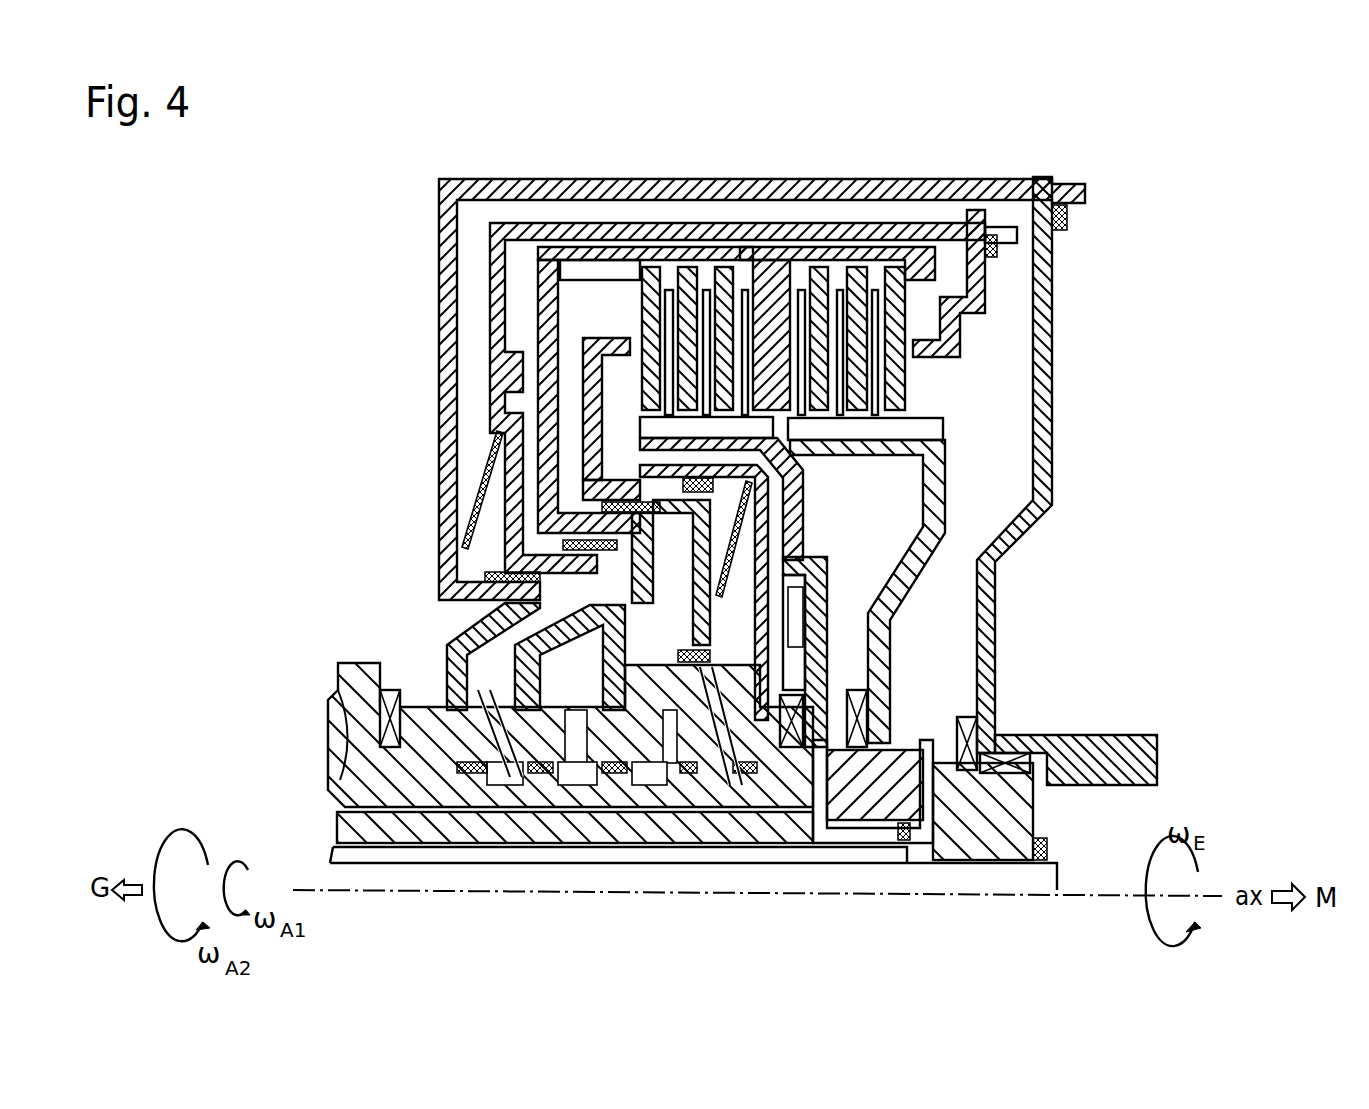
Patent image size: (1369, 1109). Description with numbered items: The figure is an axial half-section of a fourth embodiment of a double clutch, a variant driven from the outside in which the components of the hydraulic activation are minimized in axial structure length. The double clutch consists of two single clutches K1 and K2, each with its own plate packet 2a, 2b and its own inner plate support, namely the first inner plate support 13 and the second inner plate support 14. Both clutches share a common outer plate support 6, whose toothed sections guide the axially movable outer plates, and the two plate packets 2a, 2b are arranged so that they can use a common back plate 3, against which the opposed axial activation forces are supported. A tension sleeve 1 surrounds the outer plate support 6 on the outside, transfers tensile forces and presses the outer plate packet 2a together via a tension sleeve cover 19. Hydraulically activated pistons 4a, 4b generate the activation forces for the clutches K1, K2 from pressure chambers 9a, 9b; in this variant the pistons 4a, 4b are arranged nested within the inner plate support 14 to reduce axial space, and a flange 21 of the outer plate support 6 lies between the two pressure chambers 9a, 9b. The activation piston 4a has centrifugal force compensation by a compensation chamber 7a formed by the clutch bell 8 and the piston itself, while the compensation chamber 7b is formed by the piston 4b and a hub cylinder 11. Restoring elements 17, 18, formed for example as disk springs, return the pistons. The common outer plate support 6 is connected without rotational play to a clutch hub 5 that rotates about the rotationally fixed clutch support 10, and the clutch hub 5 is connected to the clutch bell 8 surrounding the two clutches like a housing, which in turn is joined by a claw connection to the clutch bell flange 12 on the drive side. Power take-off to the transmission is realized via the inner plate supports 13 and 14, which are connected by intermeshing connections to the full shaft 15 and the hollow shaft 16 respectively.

The tension sleeve 1 is at (735, 232).
The outer plate packet 2a is at (880, 380).
The plate packet 2b is at (710, 305).
The common back plate 3 is at (770, 275).
The activation piston 4a is at (498, 400).
The second activation piston 4b is at (592, 475).
The clutch hub 5 is at (340, 720).
The common outer plate support 6 is at (578, 250).
The compensation chamber 7a is at (490, 682).
The compensation chamber 7b is at (737, 578).
The clutch bell 8 is at (735, 270).
The pressure chamber 9a is at (565, 680).
The pressure chamber 9b is at (605, 640).
The clutch support 10 is at (355, 768).
The hub cylinder 11 is at (767, 617).
The clutch bell flange 12 is at (997, 700).
The first inner plate support 13 is at (933, 480).
The second inner plate support 14 is at (730, 548).
The full shaft 15 is at (858, 882).
The hollow shaft 16 is at (345, 830).
The restoring element 17 is at (478, 495).
The restoring element 18 is at (807, 577).
The tension sleeve cover 19 is at (975, 283).
The flange 21 is at (547, 340).
The first clutch K1 is at (873, 320).
The second clutch K2 is at (668, 315).